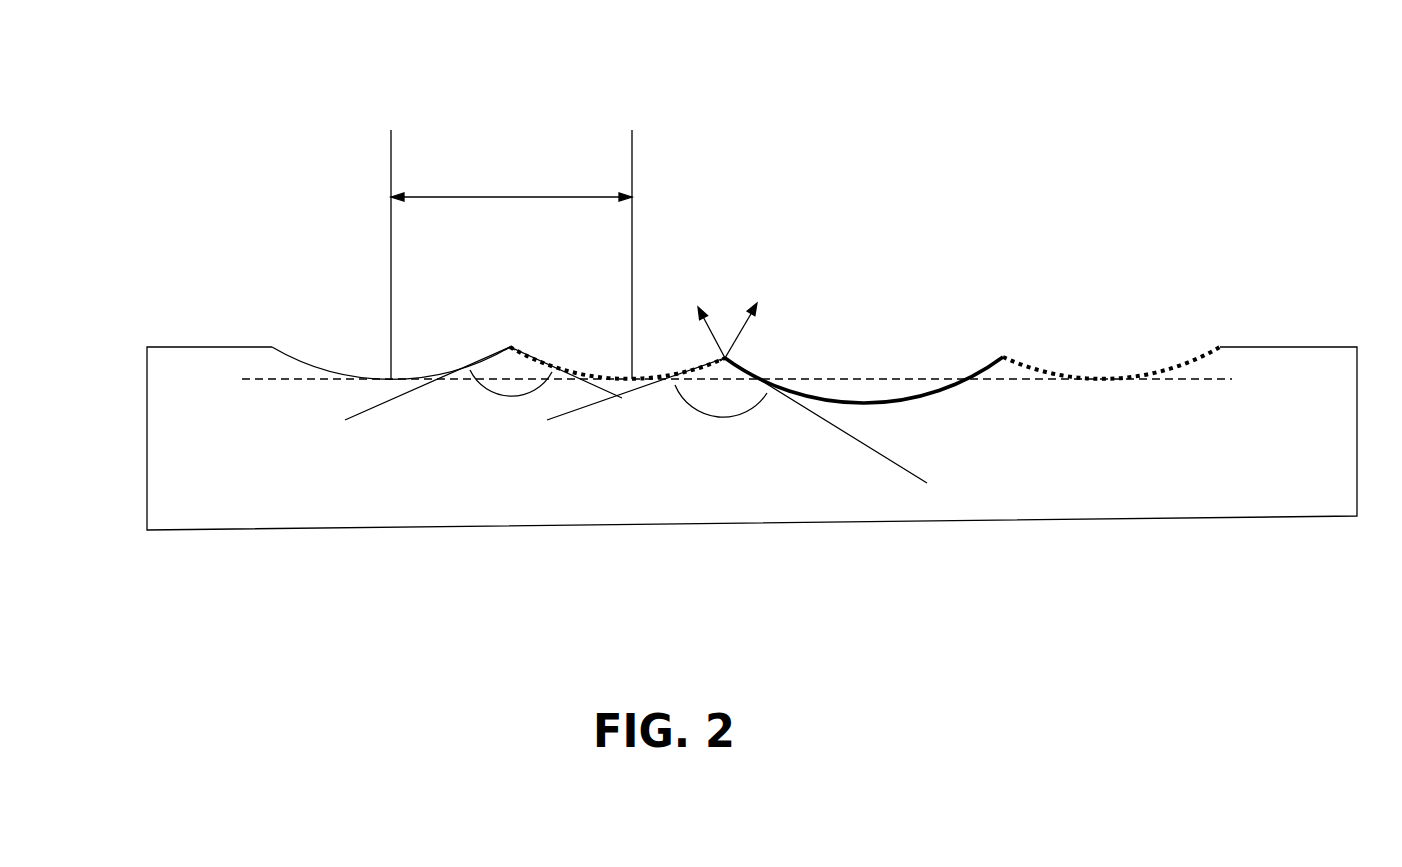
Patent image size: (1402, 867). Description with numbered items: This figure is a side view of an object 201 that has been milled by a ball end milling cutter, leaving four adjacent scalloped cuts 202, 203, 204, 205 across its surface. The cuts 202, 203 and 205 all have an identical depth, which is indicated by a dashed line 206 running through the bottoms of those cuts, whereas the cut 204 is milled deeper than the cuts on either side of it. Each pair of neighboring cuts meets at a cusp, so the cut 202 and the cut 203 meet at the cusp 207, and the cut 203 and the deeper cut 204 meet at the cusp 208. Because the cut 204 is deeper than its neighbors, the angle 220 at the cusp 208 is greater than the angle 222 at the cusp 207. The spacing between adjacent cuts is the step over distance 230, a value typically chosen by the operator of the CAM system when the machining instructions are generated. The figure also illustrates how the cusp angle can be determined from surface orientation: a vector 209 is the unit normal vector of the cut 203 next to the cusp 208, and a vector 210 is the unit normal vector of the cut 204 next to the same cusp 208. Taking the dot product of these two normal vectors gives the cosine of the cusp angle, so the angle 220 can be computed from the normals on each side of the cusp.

The object 201 is at (1317, 345).
The cut 202 is at (302, 350).
The cut 203 is at (560, 360).
The cut 204 is at (793, 388).
The cut 205 is at (1027, 358).
The dashed line 206 is at (278, 382).
The cusp 207 is at (510, 347).
The cusp 208 is at (725, 358).
The normal vector 209 is at (698, 300).
The normal vector 210 is at (758, 302).
The angle 220 is at (727, 412).
The angle 222 is at (477, 387).
The step over distance 230 is at (520, 197).